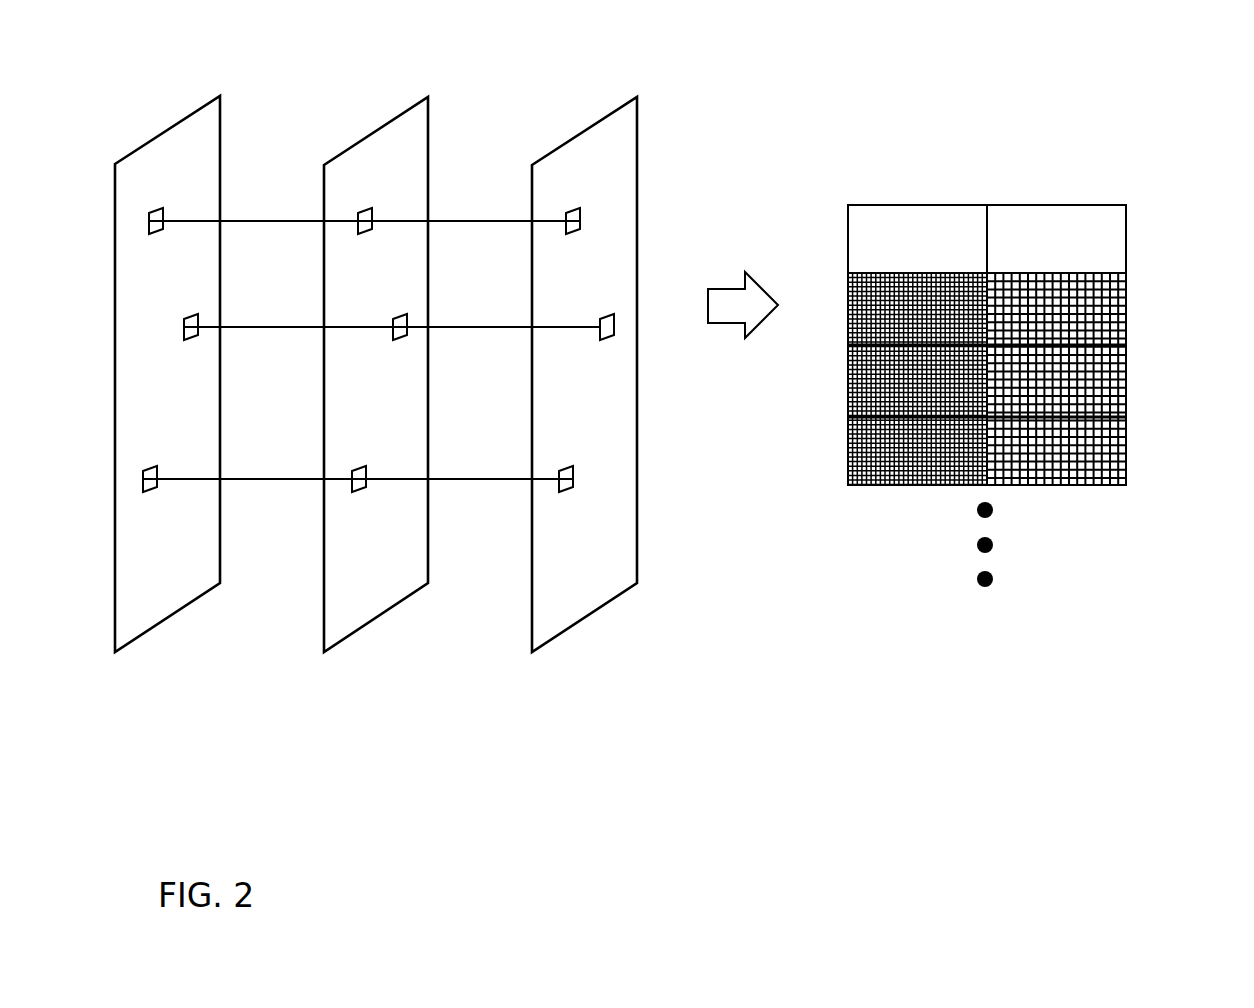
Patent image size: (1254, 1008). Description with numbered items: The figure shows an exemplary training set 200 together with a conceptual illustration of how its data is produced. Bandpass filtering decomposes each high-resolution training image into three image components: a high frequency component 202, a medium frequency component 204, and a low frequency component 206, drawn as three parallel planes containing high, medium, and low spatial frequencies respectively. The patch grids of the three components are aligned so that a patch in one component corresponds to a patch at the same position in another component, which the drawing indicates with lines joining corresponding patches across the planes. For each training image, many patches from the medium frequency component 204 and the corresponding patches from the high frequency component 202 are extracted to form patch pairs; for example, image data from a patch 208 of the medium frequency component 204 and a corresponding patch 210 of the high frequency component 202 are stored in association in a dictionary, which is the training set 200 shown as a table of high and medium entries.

The training set 200 is at (1096, 165).
The high frequency component 202 is at (638, 178).
The medium frequency component 204 is at (429, 178).
The low frequency component 206 is at (221, 178).
The patch of medium frequency component 208 is at (407, 322).
The patch of high frequency component 210 is at (615, 325).